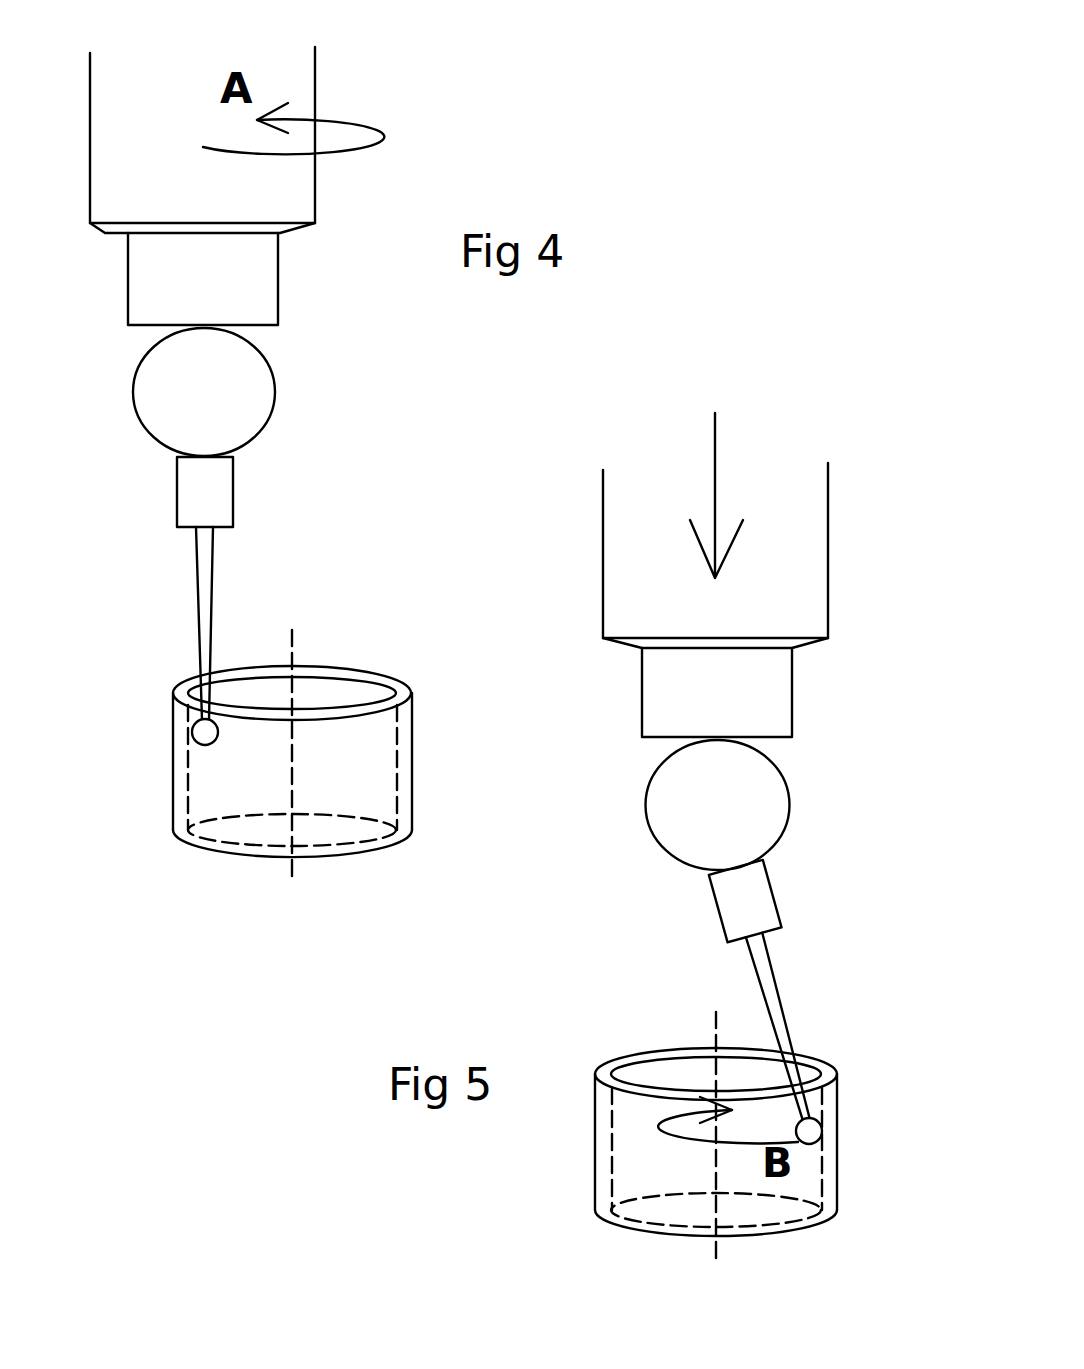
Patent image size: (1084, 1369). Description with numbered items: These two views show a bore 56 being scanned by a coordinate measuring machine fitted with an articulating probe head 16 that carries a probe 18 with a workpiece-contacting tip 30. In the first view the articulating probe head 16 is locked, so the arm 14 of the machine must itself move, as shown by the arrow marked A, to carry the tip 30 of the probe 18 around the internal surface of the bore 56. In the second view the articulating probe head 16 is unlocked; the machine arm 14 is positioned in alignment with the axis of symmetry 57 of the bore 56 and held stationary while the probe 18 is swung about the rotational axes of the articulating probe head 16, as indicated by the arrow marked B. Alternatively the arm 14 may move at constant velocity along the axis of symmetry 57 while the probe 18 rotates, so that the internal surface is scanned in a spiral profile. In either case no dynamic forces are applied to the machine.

In FIG. 4, the arm 14 is at (80, 135).
In FIG. 5, the arm 14 is at (840, 525).
In FIG. 4, the articulating probe head 16 is at (288, 413).
In FIG. 5, the articulating probe head 16 is at (810, 775).
In FIG. 4, the probe 18 is at (185, 512).
In FIG. 5, the probe 18 is at (707, 920).
In FIG. 4, the workpiece-contacting tip 30 is at (202, 744).
In FIG. 5, the workpiece-contacting tip 30 is at (821, 1130).
In FIG. 4, the bore 56 is at (237, 860).
In FIG. 5, the bore 56 is at (820, 1233).
In FIG. 4, the axis of symmetry 57 is at (296, 777).
In FIG. 5, the axis of symmetry 57 is at (719, 1154).